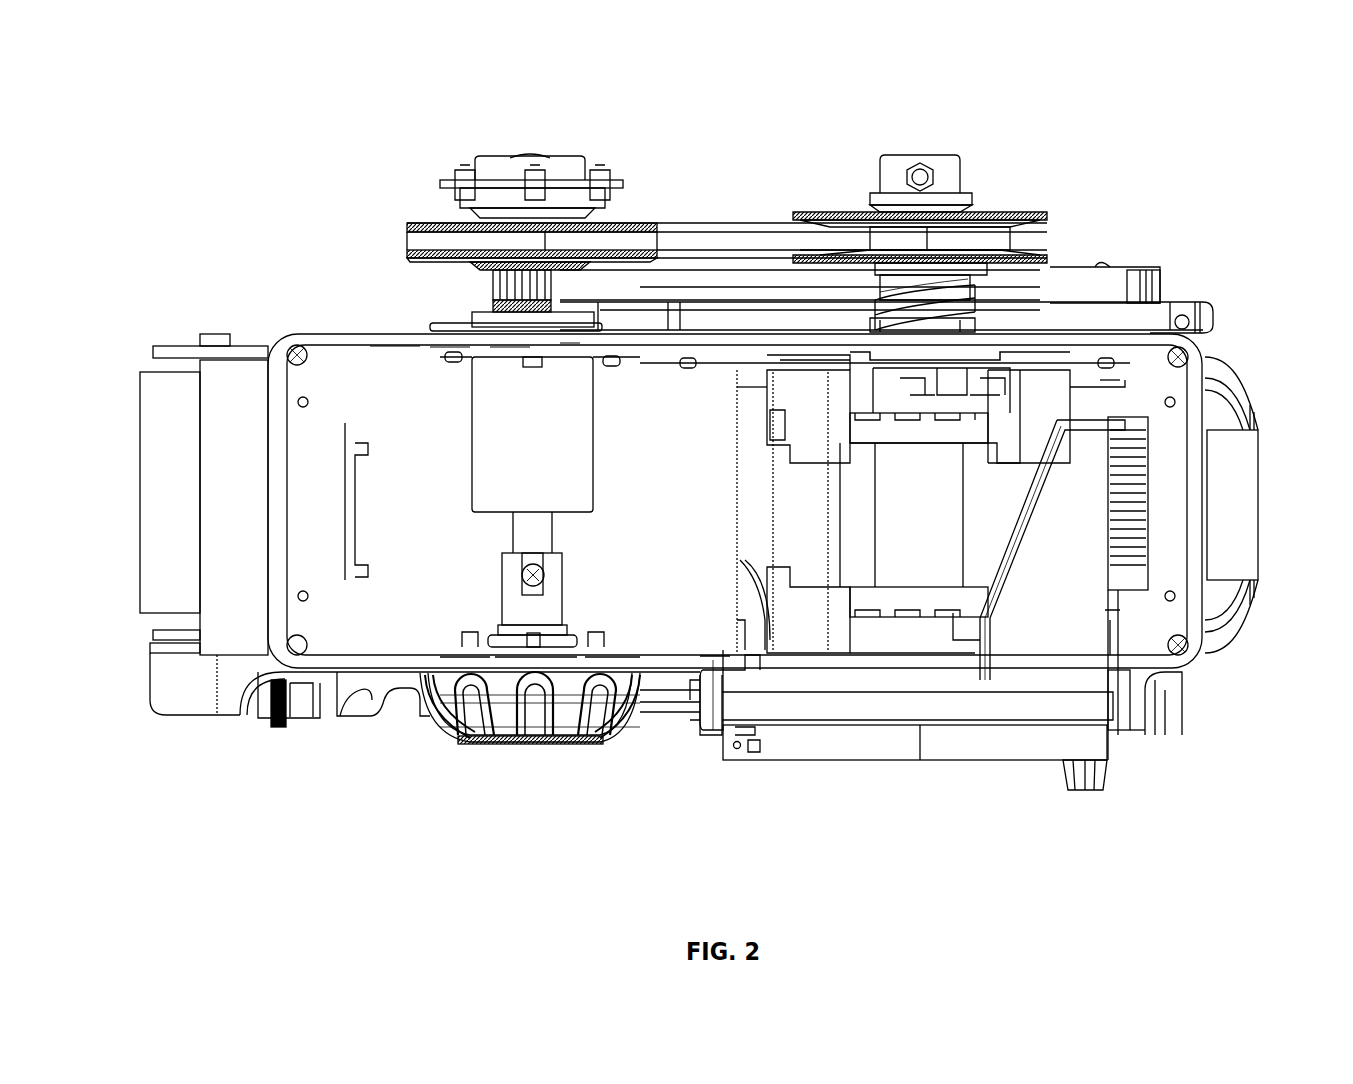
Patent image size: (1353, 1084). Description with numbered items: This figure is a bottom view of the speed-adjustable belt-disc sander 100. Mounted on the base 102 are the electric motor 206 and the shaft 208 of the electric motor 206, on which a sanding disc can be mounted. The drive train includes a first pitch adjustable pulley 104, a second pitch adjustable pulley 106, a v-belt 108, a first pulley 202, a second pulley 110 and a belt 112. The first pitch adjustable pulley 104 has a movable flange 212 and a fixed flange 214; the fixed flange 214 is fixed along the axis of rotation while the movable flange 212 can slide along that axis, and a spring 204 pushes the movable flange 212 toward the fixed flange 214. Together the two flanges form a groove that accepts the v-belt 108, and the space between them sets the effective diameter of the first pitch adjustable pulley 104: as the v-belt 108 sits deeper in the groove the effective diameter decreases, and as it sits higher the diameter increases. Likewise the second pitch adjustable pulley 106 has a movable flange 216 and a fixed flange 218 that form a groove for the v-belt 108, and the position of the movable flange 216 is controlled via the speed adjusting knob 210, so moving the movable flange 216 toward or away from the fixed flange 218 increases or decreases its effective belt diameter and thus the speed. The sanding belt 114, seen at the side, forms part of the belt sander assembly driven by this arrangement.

The speed-adjustable belt-disc sander 100 is at (1243, 108).
The base 102 is at (278, 655).
The first pitch adjustable pulley 104 is at (822, 221).
The second pitch adjustable pulley 106 is at (452, 222).
The v-belt 108 is at (697, 232).
The second pulley 110 is at (1158, 268).
The belt 112 is at (762, 285).
The sanding belt 114 is at (153, 465).
The first pulley 202 is at (493, 300).
The spring 204 is at (963, 322).
The electric motor 206 is at (885, 497).
The shaft 208 is at (918, 310).
The speed adjusting knob 210 is at (447, 697).
The movable flange 212 is at (1040, 262).
The fixed flange 214 is at (1033, 207).
The movable flange 216 is at (407, 226).
The fixed flange 218 is at (412, 262).